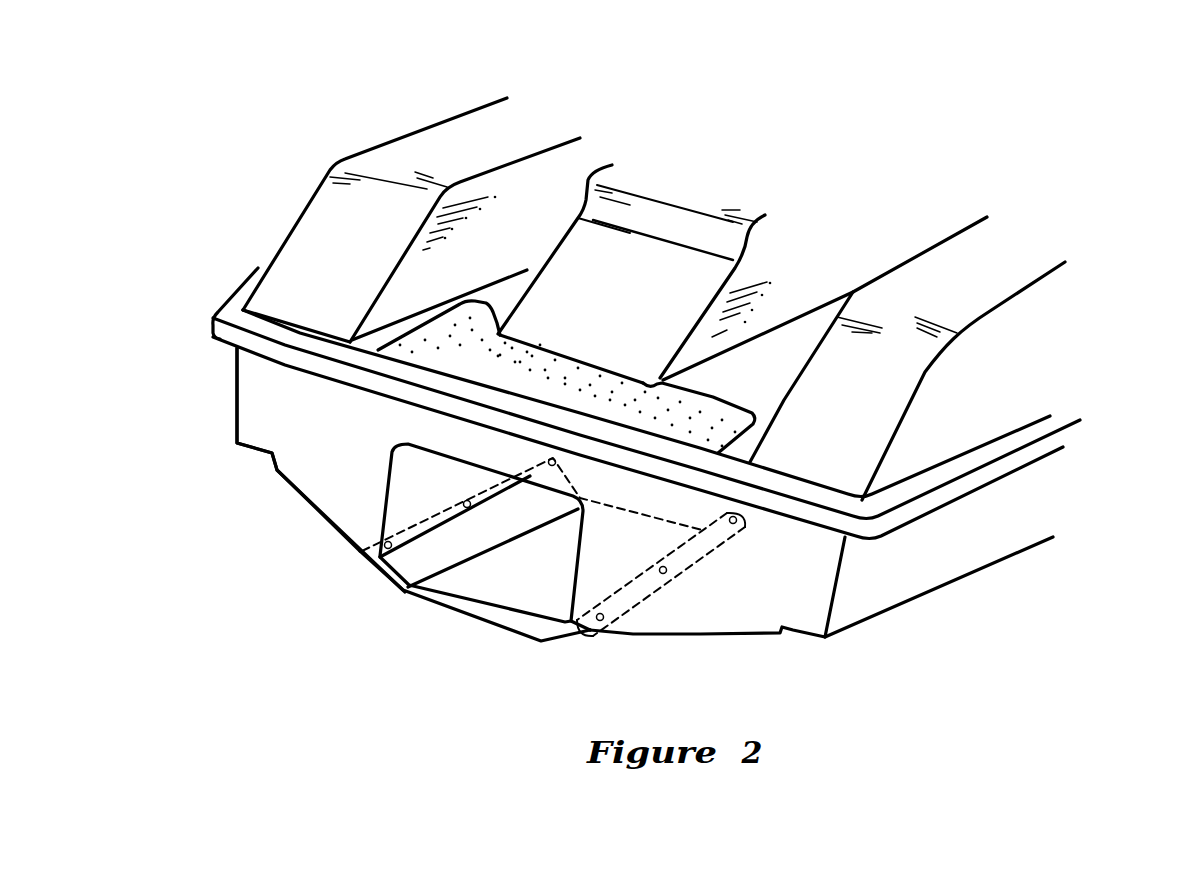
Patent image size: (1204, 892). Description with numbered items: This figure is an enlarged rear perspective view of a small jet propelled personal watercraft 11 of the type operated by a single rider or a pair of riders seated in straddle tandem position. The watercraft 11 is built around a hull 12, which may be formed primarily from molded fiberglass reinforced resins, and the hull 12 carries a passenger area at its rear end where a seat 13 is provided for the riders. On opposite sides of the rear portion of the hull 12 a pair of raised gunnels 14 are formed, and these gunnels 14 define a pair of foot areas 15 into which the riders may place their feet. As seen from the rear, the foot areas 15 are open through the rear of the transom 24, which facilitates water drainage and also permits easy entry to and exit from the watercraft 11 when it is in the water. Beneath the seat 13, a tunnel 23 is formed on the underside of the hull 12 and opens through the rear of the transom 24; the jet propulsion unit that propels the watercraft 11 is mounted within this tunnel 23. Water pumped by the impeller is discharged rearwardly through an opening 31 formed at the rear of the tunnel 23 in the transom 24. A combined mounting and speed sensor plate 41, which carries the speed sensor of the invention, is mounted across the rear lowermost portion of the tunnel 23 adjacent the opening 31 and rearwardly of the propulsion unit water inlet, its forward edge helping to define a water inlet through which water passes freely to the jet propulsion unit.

The watercraft 11 is at (1052, 228).
The hull 12 is at (1027, 382).
The seat 13 is at (687, 222).
The raised gunnels 14 is at (458, 125).
The foot areas 15 is at (516, 262).
The tunnel 23 is at (525, 596).
The transom 24 is at (313, 472).
The opening 31 is at (394, 484).
The mounting and speed sensor plate 41 is at (467, 621).